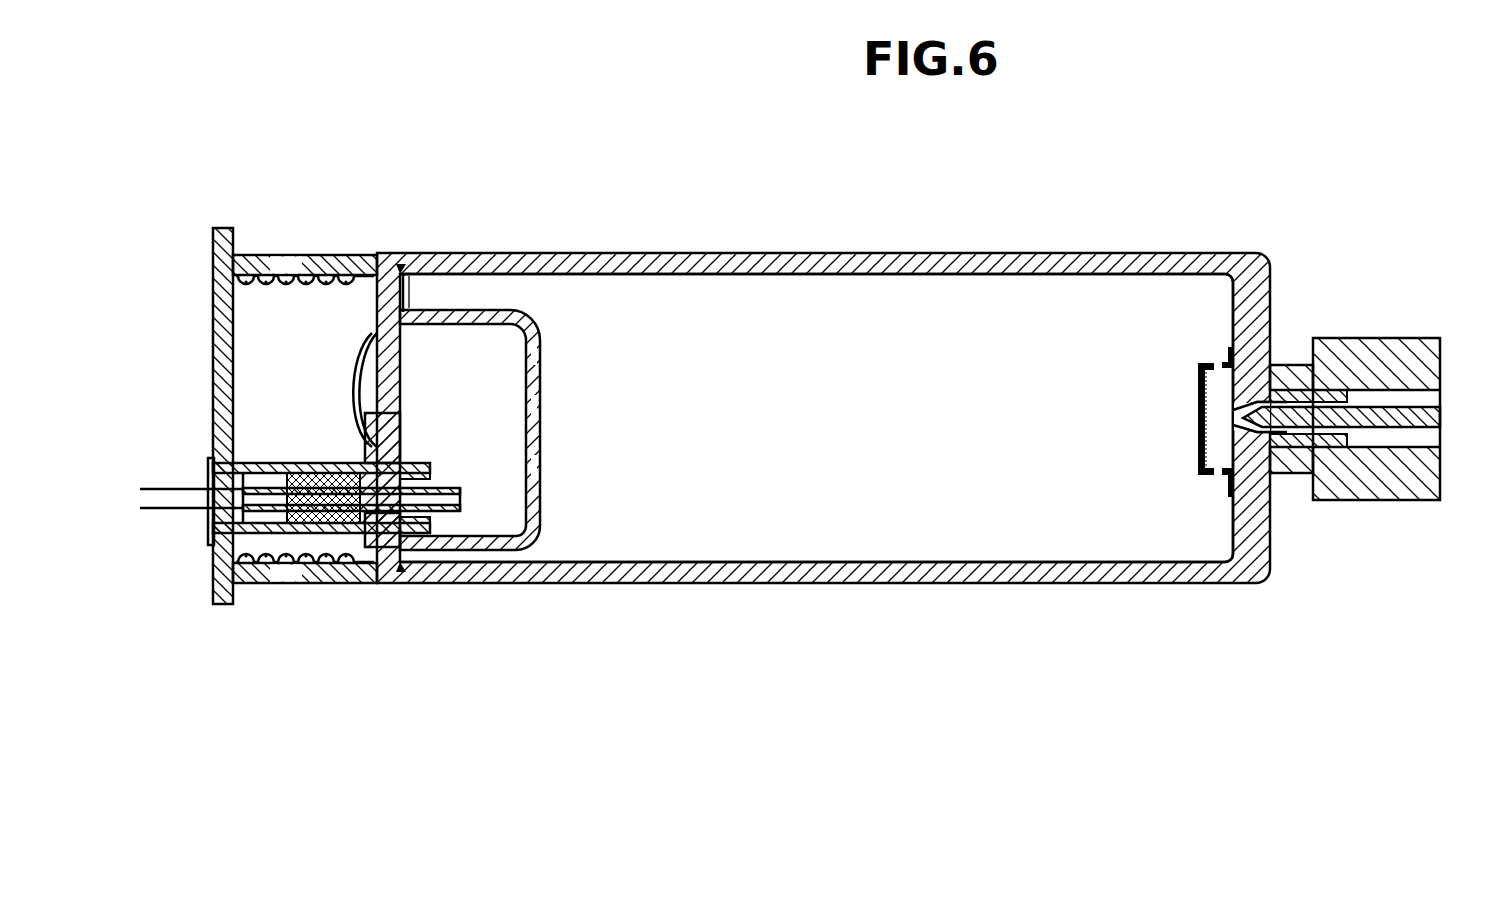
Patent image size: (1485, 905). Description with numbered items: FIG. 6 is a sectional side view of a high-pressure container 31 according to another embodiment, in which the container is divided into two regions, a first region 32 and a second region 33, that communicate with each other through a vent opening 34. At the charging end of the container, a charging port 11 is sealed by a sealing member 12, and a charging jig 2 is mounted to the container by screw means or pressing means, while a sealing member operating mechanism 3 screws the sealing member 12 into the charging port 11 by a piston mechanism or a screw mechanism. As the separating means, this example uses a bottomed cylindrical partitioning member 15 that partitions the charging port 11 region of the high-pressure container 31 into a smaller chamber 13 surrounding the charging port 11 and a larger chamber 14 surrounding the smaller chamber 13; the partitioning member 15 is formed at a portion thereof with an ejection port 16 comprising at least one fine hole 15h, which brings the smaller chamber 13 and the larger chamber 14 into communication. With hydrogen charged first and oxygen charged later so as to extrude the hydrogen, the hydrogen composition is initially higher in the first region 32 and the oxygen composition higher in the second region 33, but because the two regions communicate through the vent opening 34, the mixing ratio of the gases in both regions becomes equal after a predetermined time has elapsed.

The charging jig 2 is at (1372, 345).
The sealing member operating mechanism 3 is at (1440, 420).
The charging port 11 is at (1200, 447).
The sealing member 12 is at (1288, 415).
The smaller chamber 13 is at (1213, 393).
The larger chamber 14 is at (797, 519).
The partitioning member 15 is at (1200, 420).
The fine hole 15h is at (1222, 478).
The ejection port 16 is at (1217, 362).
The high-pressure container 31 is at (723, 262).
The first region 32 is at (462, 337).
The second region 33 is at (608, 315).
The vent opening 34 is at (545, 500).